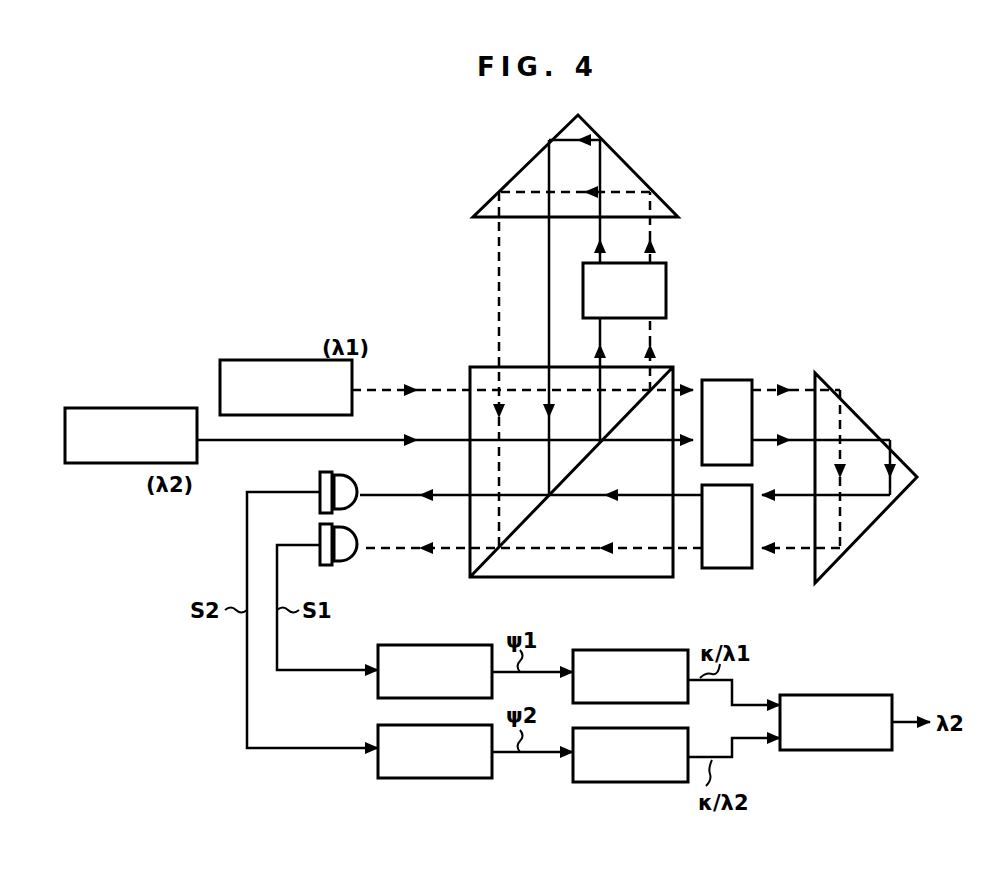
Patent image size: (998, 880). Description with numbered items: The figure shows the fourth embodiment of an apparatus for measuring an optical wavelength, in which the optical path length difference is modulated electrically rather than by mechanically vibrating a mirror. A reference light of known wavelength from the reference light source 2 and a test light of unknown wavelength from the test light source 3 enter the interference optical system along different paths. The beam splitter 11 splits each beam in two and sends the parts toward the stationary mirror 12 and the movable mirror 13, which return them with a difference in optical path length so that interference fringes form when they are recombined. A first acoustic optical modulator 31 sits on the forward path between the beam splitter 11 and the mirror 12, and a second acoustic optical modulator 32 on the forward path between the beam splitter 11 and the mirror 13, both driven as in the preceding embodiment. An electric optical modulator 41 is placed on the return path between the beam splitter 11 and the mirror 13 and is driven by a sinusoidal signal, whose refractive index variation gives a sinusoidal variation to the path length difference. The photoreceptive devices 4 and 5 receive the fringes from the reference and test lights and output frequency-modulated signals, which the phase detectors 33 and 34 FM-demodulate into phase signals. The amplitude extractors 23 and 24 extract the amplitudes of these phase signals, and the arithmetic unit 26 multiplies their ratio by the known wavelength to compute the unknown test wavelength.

The reference light source 2 is at (297, 360).
The test light source 3 is at (140, 408).
The photoreceptive device 4 is at (350, 562).
The photoreceptive device 5 is at (352, 476).
The beam splitter 11 is at (483, 367).
The mirror 12 is at (636, 162).
The mirror 13 is at (866, 420).
The amplitude extractor 23 is at (628, 650).
The amplitude extractor 24 is at (628, 782).
The arithmetic unit 26 is at (835, 750).
The acoustic optical modulator 31 is at (666, 292).
The acoustic optical modulator 32 is at (728, 380).
The phase detector 33 is at (440, 645).
The phase detector 34 is at (440, 778).
The electric optical modulator 41 is at (732, 568).